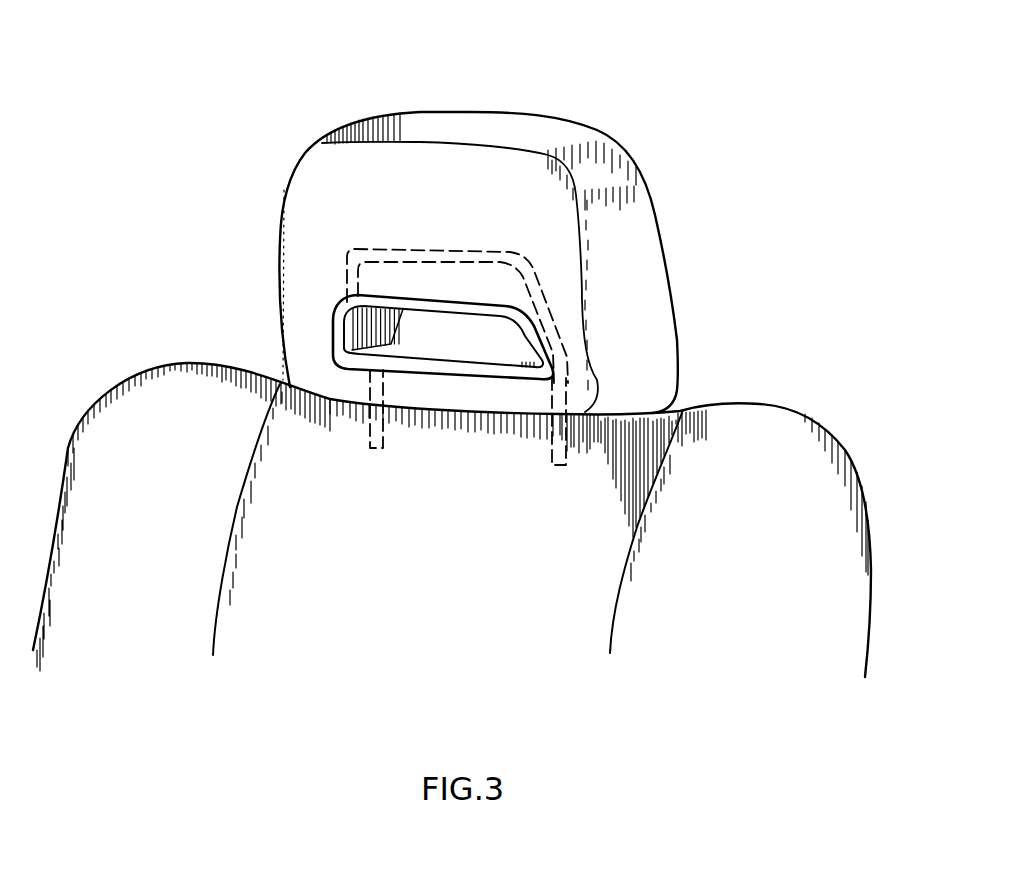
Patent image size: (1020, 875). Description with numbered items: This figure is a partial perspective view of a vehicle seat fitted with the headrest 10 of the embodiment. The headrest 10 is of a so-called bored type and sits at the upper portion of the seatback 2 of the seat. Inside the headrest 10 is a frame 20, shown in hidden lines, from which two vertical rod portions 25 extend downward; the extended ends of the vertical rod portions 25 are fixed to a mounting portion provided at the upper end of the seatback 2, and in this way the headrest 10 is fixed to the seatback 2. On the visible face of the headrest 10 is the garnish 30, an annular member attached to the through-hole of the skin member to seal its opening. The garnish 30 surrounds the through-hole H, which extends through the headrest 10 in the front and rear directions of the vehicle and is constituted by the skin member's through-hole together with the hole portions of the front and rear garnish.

The seatback 2 is at (853, 460).
The headrest 10 is at (668, 276).
The frame 20 is at (469, 280).
The vertical rod portions 25 is at (477, 396).
The garnish 30 is at (367, 289).
The through-hole H is at (363, 308).